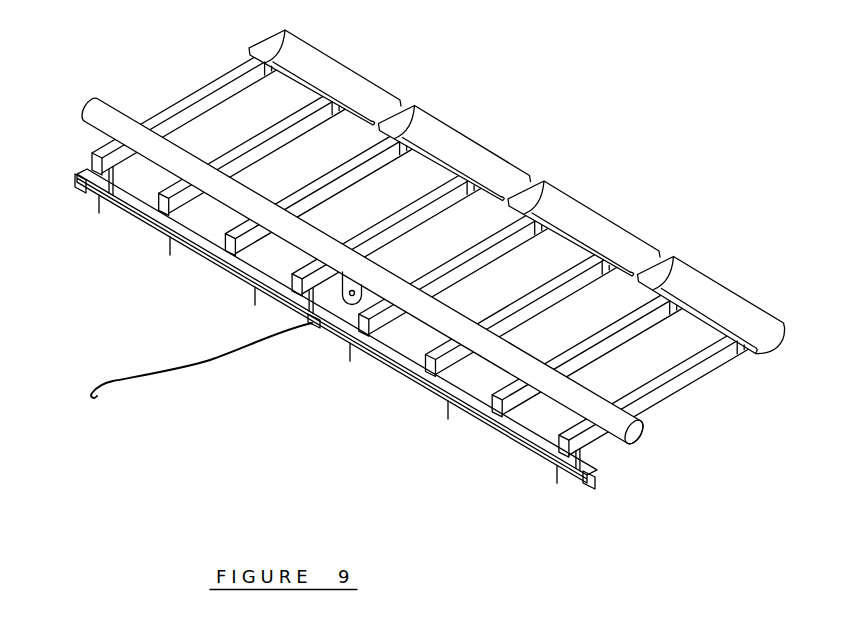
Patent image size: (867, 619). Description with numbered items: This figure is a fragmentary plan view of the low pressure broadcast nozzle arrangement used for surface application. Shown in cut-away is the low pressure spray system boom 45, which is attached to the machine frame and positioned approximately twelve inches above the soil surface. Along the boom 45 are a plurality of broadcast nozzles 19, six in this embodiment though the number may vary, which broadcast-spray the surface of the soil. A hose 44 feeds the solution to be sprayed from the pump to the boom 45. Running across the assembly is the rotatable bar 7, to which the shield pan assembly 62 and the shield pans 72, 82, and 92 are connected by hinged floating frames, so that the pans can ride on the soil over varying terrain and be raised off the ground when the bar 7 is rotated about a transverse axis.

The rotatable bar 7 is at (375, 262).
The broadcast nozzles 19 is at (96, 209).
The hose 44 is at (198, 366).
The low pressure spray system boom 45 is at (490, 432).
The shield pan assembly 62 is at (719, 279).
The shield pan 72 is at (601, 208).
The shield pan 82 is at (481, 136).
The shield pan 92 is at (341, 57).